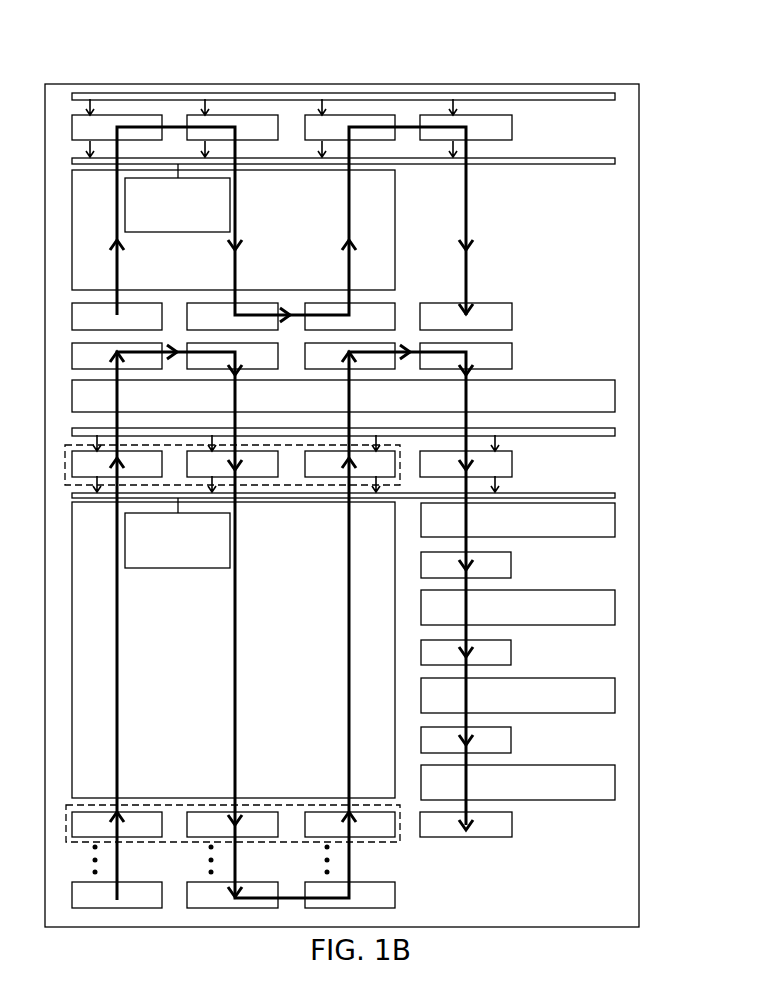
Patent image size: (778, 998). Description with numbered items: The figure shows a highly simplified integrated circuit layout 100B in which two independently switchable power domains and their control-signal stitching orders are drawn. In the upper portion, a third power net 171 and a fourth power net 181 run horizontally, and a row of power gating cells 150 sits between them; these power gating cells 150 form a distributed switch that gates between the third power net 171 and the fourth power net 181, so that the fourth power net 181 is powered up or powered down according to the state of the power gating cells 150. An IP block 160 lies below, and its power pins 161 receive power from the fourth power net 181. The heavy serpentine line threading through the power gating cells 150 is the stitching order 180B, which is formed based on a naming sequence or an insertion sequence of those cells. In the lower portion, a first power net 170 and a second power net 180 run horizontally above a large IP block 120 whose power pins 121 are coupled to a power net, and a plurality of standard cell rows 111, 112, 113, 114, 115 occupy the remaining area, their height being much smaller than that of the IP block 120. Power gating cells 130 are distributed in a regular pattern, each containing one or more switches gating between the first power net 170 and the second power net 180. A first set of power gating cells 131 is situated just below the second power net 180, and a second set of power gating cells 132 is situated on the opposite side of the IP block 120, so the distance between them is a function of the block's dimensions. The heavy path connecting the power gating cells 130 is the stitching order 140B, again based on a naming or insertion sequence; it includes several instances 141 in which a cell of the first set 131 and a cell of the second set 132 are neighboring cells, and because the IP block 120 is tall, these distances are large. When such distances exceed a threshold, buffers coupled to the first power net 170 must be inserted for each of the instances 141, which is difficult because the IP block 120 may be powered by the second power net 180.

The integrated circuit layout 100B is at (128, 76).
The third power net 171 is at (615, 97).
The fourth power net 181 is at (615, 161).
The first power net 170 is at (615, 432).
The second power net 180 is at (615, 495).
The IP block 160 is at (283, 230).
The power pins 161 is at (193, 227).
The power gating cells 150 is at (108, 136).
The stitching order 180B is at (256, 312).
The standard cell row 111 is at (537, 401).
The standard cell row 112 is at (583, 527).
The standard cell row 113 is at (583, 615).
The standard cell row 114 is at (583, 703).
The standard cell row 115 is at (583, 790).
The IP block 120 is at (208, 690).
The power pins 121 is at (193, 563).
The power gating cells 130 is at (108, 364).
The first set of power gating cells 131 is at (85, 487).
The second set of power gating cells 132 is at (85, 843).
The stitching order 140B is at (291, 622).
The instances 141 is at (117, 622).